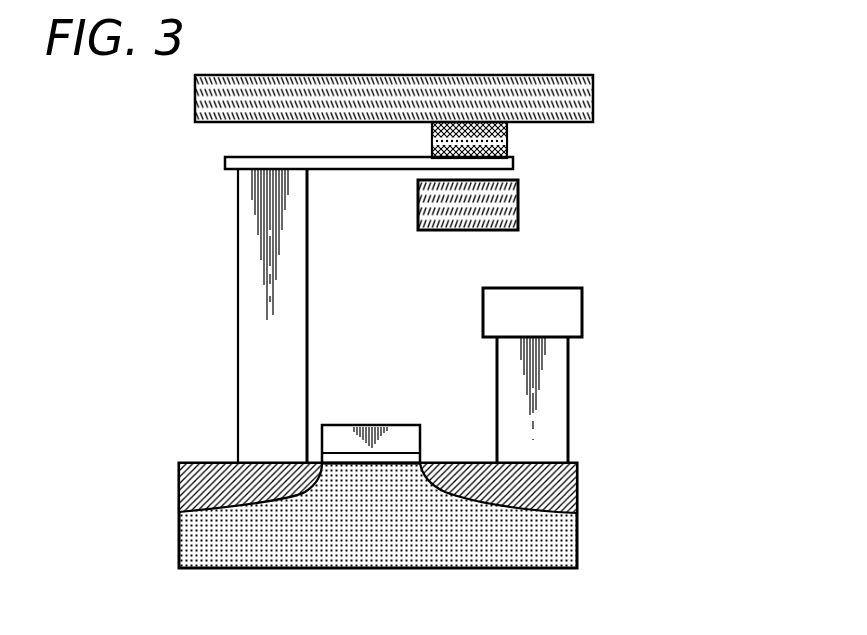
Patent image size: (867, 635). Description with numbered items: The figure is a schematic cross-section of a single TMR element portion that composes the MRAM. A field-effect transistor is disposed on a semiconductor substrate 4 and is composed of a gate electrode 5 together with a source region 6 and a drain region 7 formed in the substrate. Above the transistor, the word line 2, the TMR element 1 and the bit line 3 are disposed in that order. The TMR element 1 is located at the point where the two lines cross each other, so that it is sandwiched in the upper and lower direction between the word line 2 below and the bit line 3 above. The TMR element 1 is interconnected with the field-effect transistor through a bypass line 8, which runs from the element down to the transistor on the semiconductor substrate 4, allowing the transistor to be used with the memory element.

The TMR element 1 is at (514, 123).
The word line 2 is at (490, 212).
The bit line 3 is at (570, 107).
The semiconductor substrate 4 is at (543, 547).
The gate electrode 5 is at (372, 426).
The source region 6 is at (180, 490).
The drain region 7 is at (523, 490).
The bypass line 8 is at (238, 313).